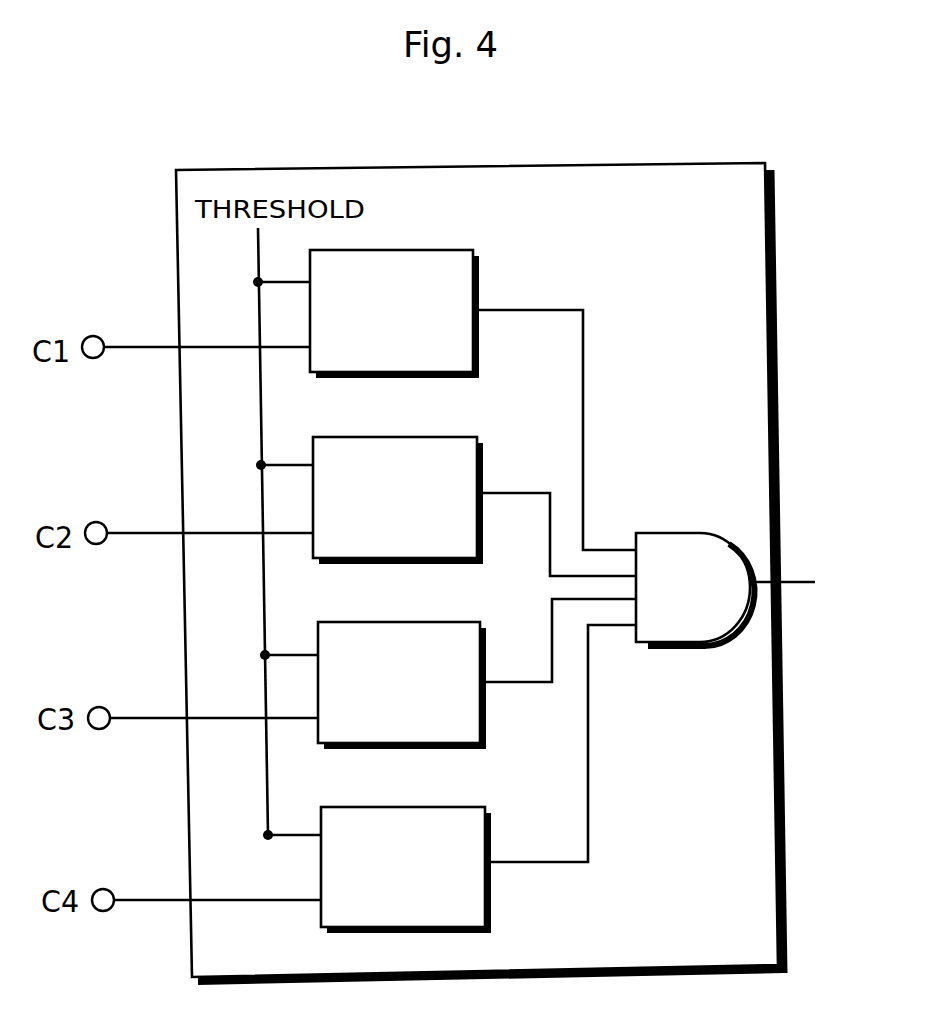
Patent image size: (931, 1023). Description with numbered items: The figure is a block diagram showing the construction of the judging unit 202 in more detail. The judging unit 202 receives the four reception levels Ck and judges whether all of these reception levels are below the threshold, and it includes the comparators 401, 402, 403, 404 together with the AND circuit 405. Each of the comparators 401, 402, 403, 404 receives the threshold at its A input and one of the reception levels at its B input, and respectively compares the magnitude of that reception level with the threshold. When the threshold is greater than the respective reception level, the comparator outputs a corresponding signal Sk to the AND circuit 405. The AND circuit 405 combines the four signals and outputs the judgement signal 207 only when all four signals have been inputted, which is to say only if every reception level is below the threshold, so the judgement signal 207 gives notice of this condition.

The judging unit 202 is at (435, 166).
The comparator 401 is at (437, 250).
The comparator 402 is at (438, 437).
The comparator 403 is at (442, 622).
The comparator 404 is at (445, 807).
The AND circuit 405 is at (657, 533).
The judgement signal 207 is at (785, 582).